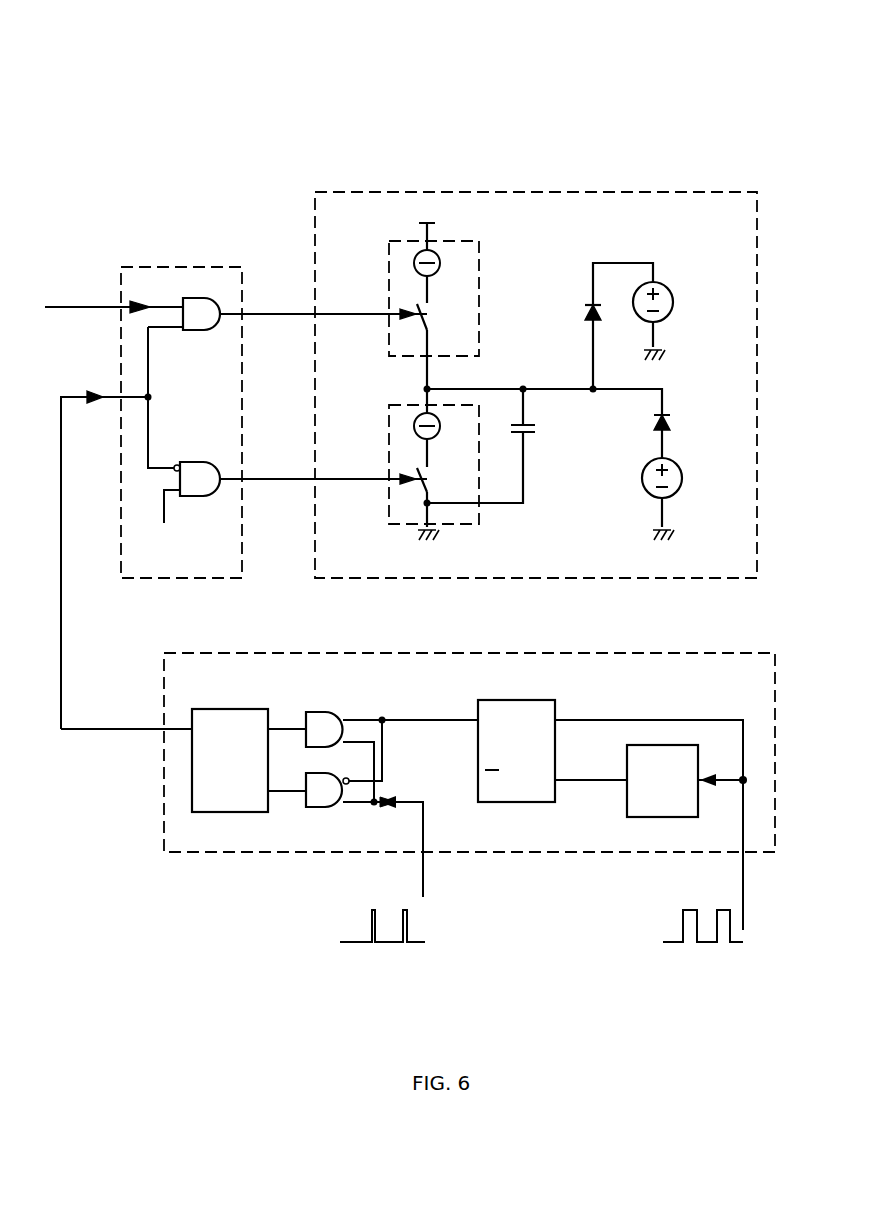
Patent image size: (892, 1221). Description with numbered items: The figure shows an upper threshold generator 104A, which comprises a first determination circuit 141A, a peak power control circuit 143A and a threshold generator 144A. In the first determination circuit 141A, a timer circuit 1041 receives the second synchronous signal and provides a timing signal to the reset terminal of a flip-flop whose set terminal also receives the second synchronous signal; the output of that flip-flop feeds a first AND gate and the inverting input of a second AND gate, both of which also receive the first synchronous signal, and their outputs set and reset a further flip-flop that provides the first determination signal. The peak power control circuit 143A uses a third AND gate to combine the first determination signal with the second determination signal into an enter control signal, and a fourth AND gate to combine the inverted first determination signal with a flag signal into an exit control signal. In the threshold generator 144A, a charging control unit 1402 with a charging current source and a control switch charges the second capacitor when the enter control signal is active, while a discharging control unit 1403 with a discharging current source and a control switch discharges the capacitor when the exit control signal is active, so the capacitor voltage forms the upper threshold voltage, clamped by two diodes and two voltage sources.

The upper threshold generator 104A is at (382, 70).
The peak power control circuit 143A is at (197, 267).
The threshold generator 144A is at (757, 248).
The charging control unit 1402 is at (389, 340).
The discharging control unit 1403 is at (389, 506).
The first determination circuit 141A is at (775, 723).
The timer circuit 1041 is at (651, 817).